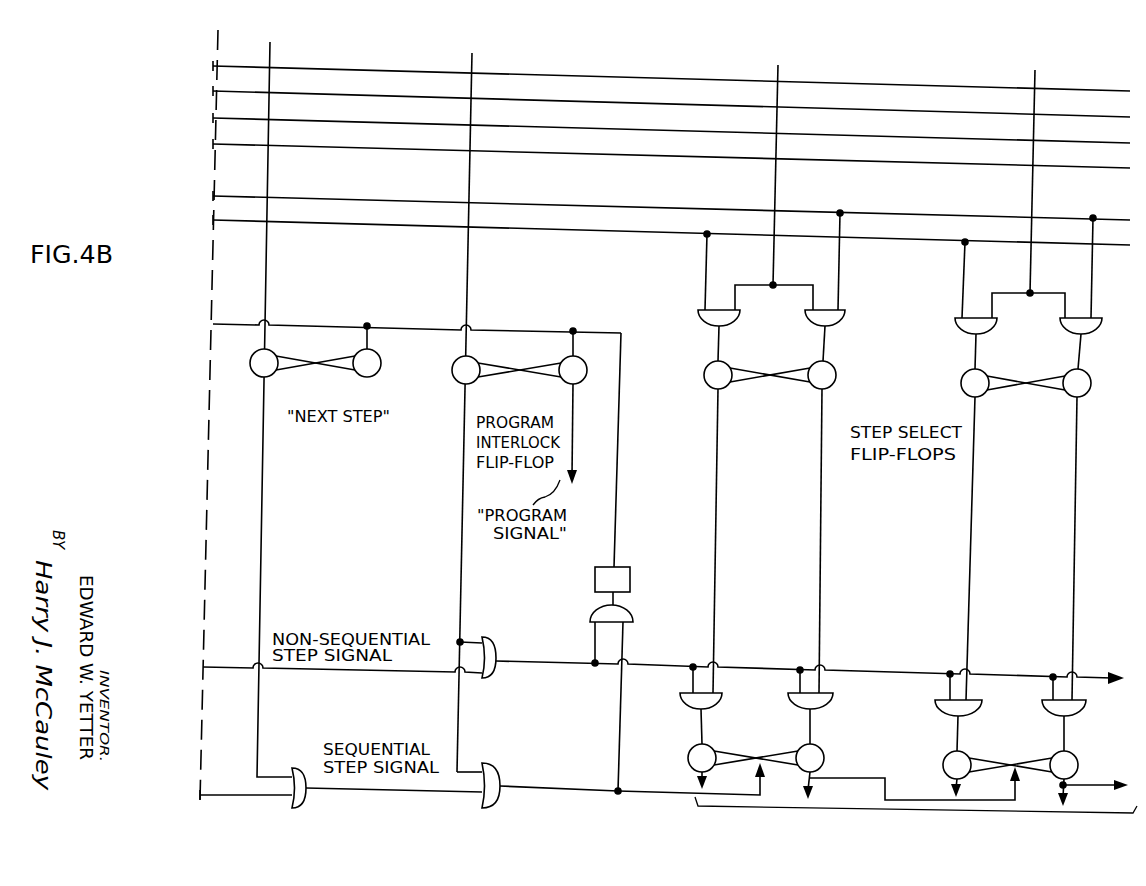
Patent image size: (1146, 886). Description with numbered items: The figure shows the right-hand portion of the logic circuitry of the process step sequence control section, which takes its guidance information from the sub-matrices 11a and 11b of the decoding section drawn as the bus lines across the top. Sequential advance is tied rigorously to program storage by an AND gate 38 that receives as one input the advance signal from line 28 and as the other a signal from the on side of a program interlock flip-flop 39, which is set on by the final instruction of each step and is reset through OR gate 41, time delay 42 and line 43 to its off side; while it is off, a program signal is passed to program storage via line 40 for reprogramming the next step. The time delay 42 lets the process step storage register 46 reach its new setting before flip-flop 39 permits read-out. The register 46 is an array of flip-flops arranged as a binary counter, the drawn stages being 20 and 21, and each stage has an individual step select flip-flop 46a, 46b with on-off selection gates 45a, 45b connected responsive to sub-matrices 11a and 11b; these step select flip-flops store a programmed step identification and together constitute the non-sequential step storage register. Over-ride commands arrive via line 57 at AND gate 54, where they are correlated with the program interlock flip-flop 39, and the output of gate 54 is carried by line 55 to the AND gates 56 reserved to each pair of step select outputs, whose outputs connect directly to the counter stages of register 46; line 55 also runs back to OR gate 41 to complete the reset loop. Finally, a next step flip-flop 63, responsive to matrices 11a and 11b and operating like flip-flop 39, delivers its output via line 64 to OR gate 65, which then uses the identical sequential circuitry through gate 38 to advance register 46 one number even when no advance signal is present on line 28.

The sub-matrix 11a is at (403, 70).
The sub-matrix 11b is at (389, 185).
The binary counter stage 20 is at (854, 765).
The binary counter stage 21 is at (1035, 770).
The advance signal line 28 is at (231, 793).
The AND gate 38 is at (501, 780).
The program interlock flip-flop 39 is at (519, 379).
The program signal line 40 is at (575, 435).
The OR gate 41 is at (634, 623).
The time delay 42 is at (636, 576).
The line 43 is at (618, 479).
The on-off selection gate 45a is at (775, 292).
The on-off selection gate 45b is at (1028, 300).
The process step storage register 46 is at (912, 781).
The step select flip-flop 46a is at (771, 383).
The step select flip-flop 46b is at (1026, 393).
The AND gate 54 is at (494, 650).
The line 55 is at (530, 668).
The AND gate 56 is at (786, 694).
The line 57 is at (305, 672).
The next step flip-flop 63 is at (318, 373).
The line 64 is at (262, 543).
The OR gate 65 is at (300, 769).